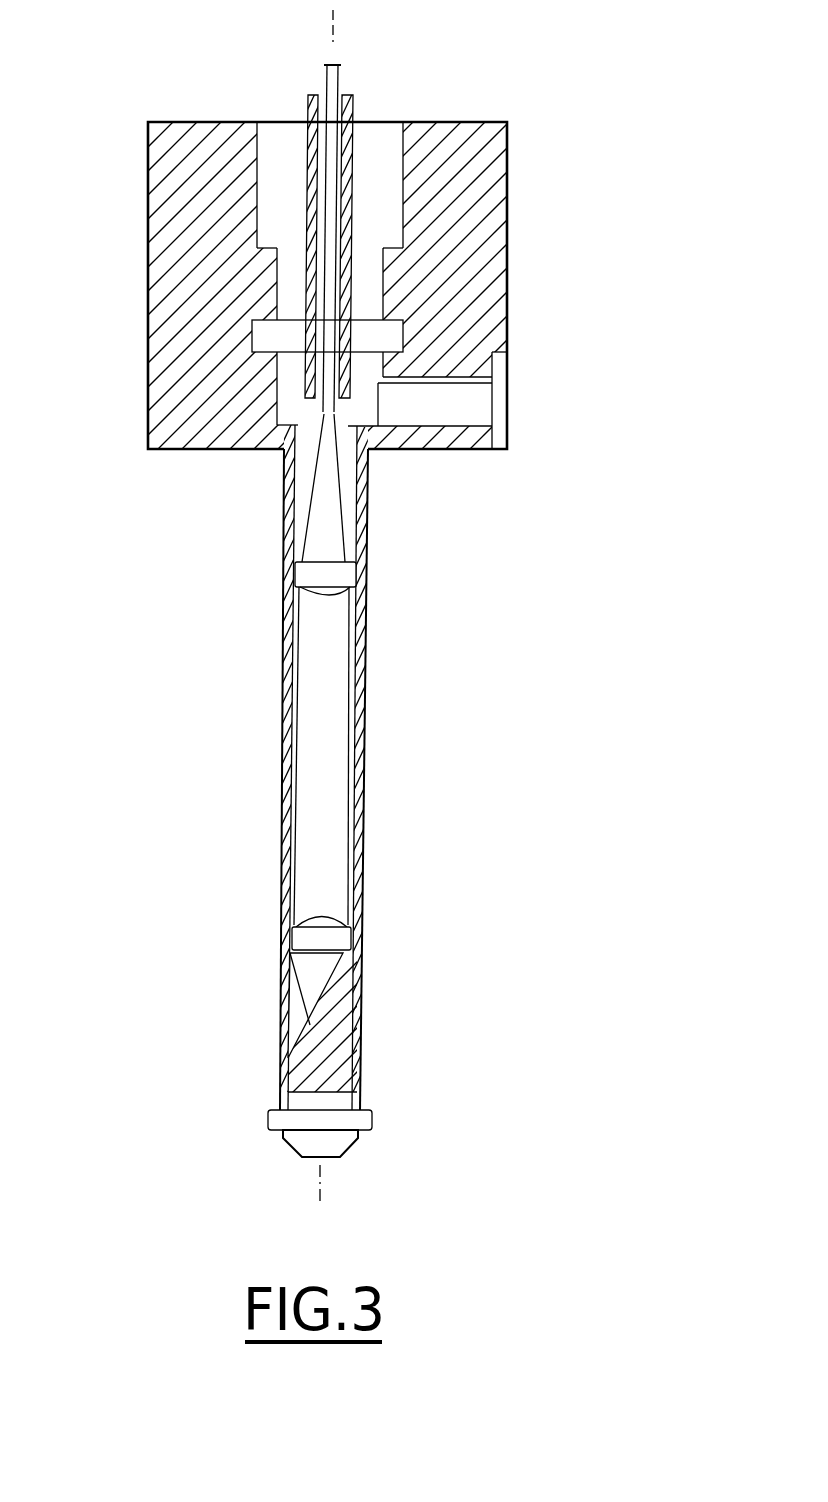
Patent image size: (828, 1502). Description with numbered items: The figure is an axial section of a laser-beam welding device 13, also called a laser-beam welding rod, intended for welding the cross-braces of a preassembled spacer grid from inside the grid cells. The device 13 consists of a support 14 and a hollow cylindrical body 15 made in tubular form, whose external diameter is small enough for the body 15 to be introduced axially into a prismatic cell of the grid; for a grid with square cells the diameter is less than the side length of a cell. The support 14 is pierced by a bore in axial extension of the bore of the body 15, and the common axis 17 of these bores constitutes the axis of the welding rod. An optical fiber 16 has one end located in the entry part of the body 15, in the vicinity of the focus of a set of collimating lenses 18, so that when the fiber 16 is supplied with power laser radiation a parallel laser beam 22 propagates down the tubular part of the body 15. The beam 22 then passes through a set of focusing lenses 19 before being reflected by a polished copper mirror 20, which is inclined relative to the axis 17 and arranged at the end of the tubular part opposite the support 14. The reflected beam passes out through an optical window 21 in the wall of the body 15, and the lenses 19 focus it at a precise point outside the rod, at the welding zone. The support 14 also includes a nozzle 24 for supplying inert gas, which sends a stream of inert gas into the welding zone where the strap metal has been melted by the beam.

The laser-beam welding device 13 is at (215, 735).
The support 14 is at (498, 207).
The hollow cylindrical body 15 is at (378, 1023).
The optical fiber 16 is at (340, 80).
The axis 17 is at (323, 1158).
The set of collimating lenses 18 is at (368, 571).
The set of focusing lenses 19 is at (353, 942).
The polished copper mirror 20 is at (333, 977).
The optical window 21 is at (280, 977).
The parallel laser beam 22 is at (328, 698).
The nozzle 24 is at (477, 407).